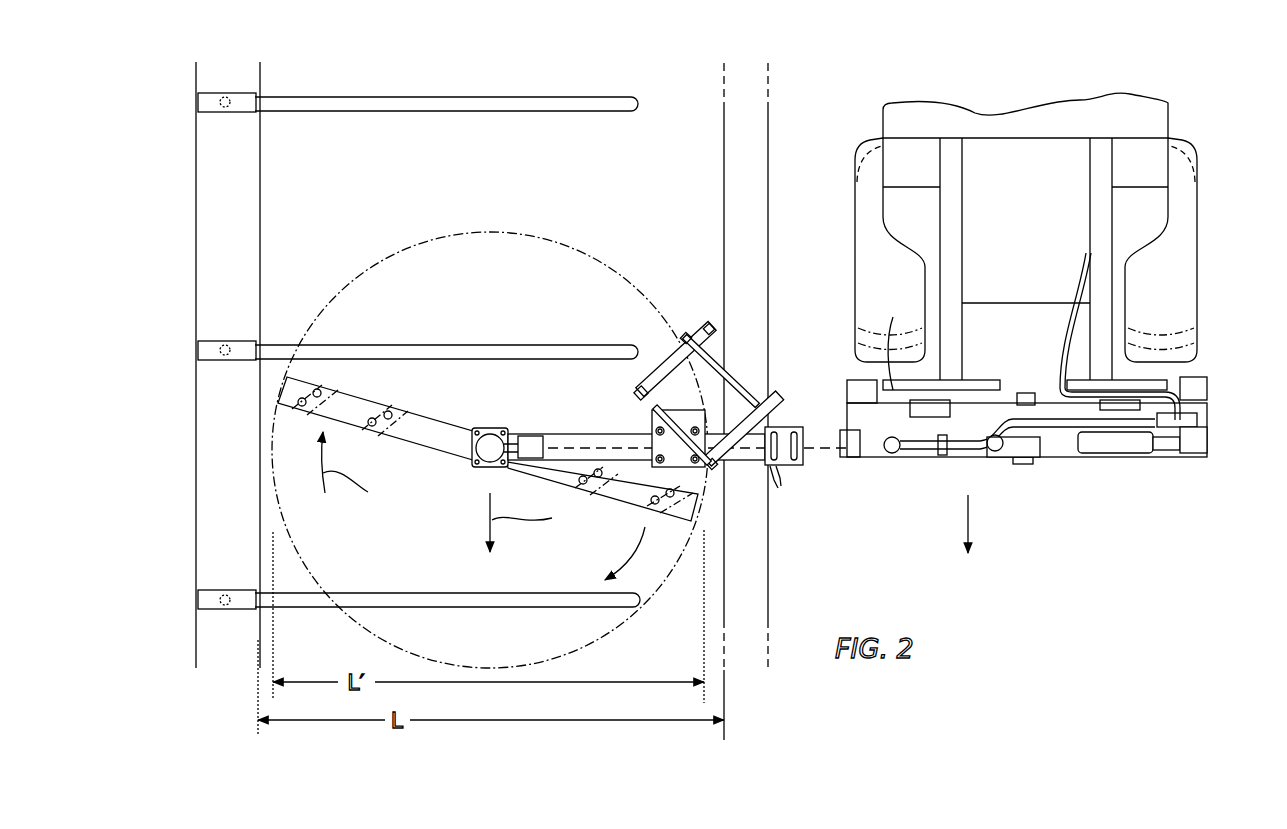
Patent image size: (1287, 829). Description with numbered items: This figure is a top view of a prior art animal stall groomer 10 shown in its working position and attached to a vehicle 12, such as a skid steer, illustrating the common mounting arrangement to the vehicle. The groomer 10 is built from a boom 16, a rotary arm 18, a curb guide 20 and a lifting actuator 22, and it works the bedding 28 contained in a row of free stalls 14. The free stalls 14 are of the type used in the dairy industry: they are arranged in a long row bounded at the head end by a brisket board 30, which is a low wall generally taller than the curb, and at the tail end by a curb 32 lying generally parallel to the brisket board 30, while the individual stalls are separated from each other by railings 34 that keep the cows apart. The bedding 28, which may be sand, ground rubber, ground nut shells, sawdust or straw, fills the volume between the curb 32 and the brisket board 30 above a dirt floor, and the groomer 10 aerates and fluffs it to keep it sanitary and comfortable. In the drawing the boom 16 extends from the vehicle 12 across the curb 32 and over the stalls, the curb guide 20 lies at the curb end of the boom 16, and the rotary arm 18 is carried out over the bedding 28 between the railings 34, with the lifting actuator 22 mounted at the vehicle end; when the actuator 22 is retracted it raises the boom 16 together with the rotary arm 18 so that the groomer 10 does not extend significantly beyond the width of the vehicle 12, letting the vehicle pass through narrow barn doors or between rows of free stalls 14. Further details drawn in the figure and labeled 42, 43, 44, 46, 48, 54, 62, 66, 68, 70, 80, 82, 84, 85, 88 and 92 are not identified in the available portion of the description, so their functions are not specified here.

The animal stall groomer 10 is at (817, 505).
The vehicle 12 is at (1150, 120).
The free stalls 14 is at (522, 183).
The boom 16 is at (883, 422).
The rotary arm 18 is at (661, 455).
The curb guide 20 is at (801, 467).
The lifting actuator 22 is at (1117, 445).
The bedding 28 is at (312, 201).
The brisket board 30 is at (218, 258).
The curb 32 is at (786, 401).
The railings 34 is at (463, 100).
The valve block 42 is at (1040, 452).
The hose 43 is at (943, 397).
The fastener holes / fastener 44 is at (324, 391).
The pin 46 is at (773, 478).
The post face 48 is at (771, 577).
The connector block 54 is at (790, 463).
The mounting bracket 62 is at (683, 377).
The connecting rod 66 is at (743, 387).
The diagonal bar 68 is at (655, 372).
The bolt 70 is at (690, 470).
The pivot shaft 80 is at (498, 440).
The rod 82 is at (533, 420).
The hub housing 84 is at (490, 436).
The hole pattern 85 is at (385, 410).
The swing circle 88 is at (373, 263).
The rotation direction arrow 92 is at (291, 398).